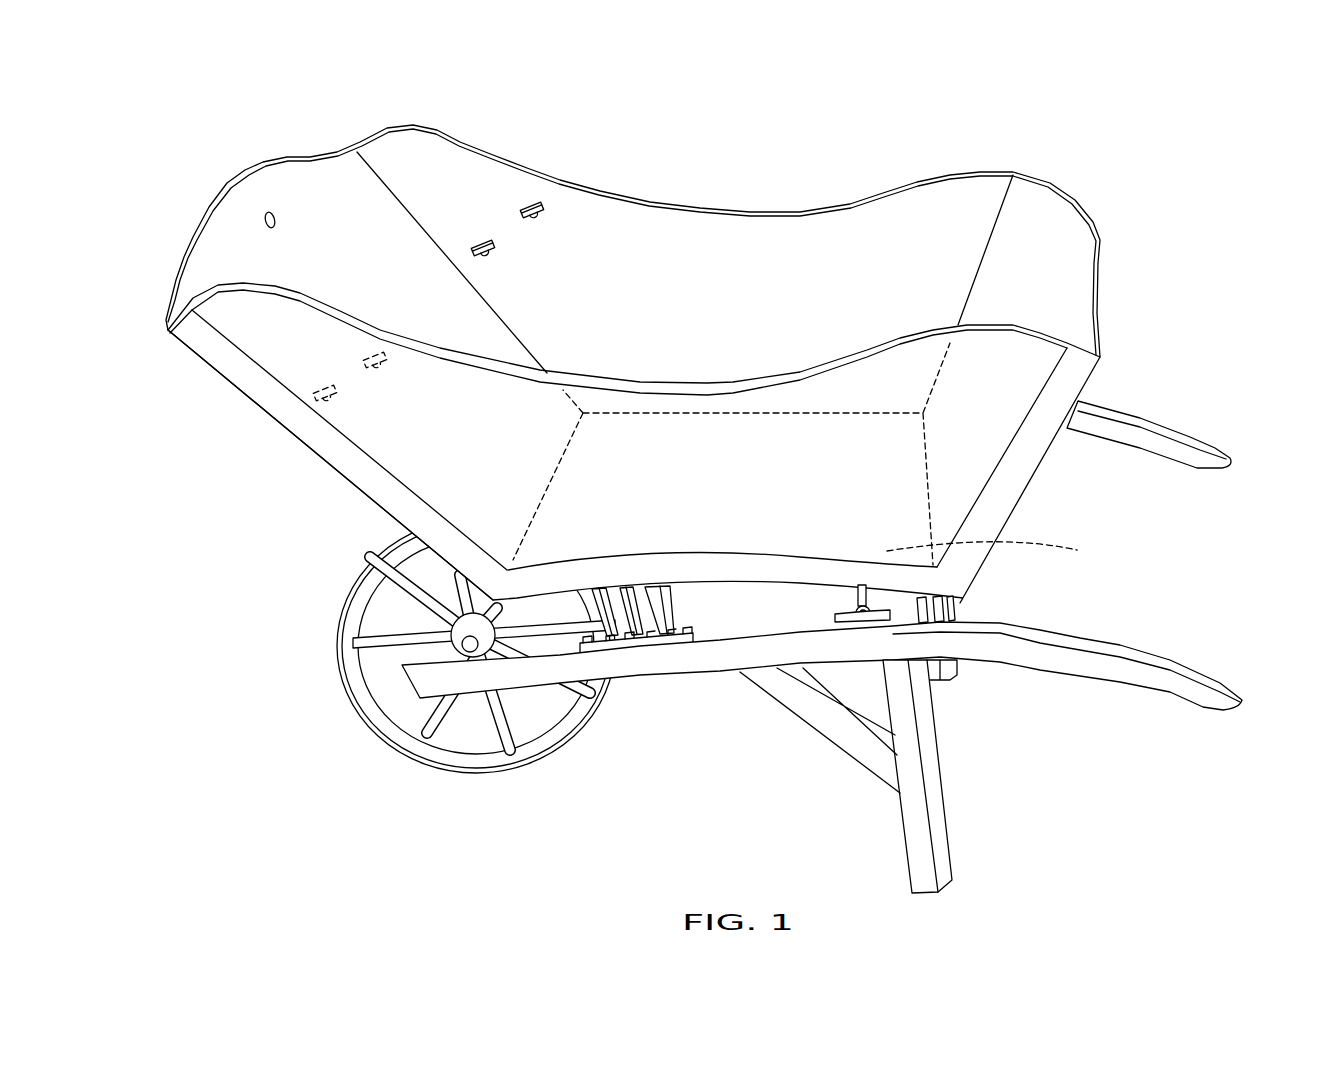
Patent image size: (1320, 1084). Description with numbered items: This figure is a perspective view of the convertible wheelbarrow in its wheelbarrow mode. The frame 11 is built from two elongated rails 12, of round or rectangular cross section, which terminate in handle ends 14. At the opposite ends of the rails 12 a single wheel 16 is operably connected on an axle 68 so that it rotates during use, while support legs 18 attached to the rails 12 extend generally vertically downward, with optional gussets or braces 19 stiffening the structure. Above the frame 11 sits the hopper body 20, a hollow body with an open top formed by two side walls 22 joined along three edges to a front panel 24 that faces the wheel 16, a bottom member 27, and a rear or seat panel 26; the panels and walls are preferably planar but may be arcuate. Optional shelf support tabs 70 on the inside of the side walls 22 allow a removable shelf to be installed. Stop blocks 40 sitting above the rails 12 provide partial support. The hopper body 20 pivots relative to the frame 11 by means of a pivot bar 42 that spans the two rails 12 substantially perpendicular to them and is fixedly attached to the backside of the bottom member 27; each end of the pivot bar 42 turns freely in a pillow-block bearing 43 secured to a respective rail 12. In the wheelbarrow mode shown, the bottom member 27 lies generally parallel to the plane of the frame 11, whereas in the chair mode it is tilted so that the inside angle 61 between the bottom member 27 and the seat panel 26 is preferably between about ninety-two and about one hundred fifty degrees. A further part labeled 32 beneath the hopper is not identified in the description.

The frame 11 is at (822, 647).
The elongated rails 12 is at (1118, 428).
The handle ends 14 is at (1220, 706).
The wheel 16 is at (372, 678).
The support legs 18 is at (917, 813).
The gussets or braces 19 is at (797, 703).
The hopper body 20 is at (660, 344).
The side walls 22 is at (395, 405).
The front panel 24 is at (295, 190).
The rear or seat panel 26 is at (1050, 235).
The bottom member 27 is at (996, 550).
The rail 32 is at (655, 645).
The stop blocks 40 is at (660, 610).
The pivot bar 42 is at (856, 600).
The pillow-block bearing 43 is at (860, 622).
The inside angle 61 is at (937, 368).
The axle 68 is at (523, 617).
The shelf support tabs 70 is at (530, 203).